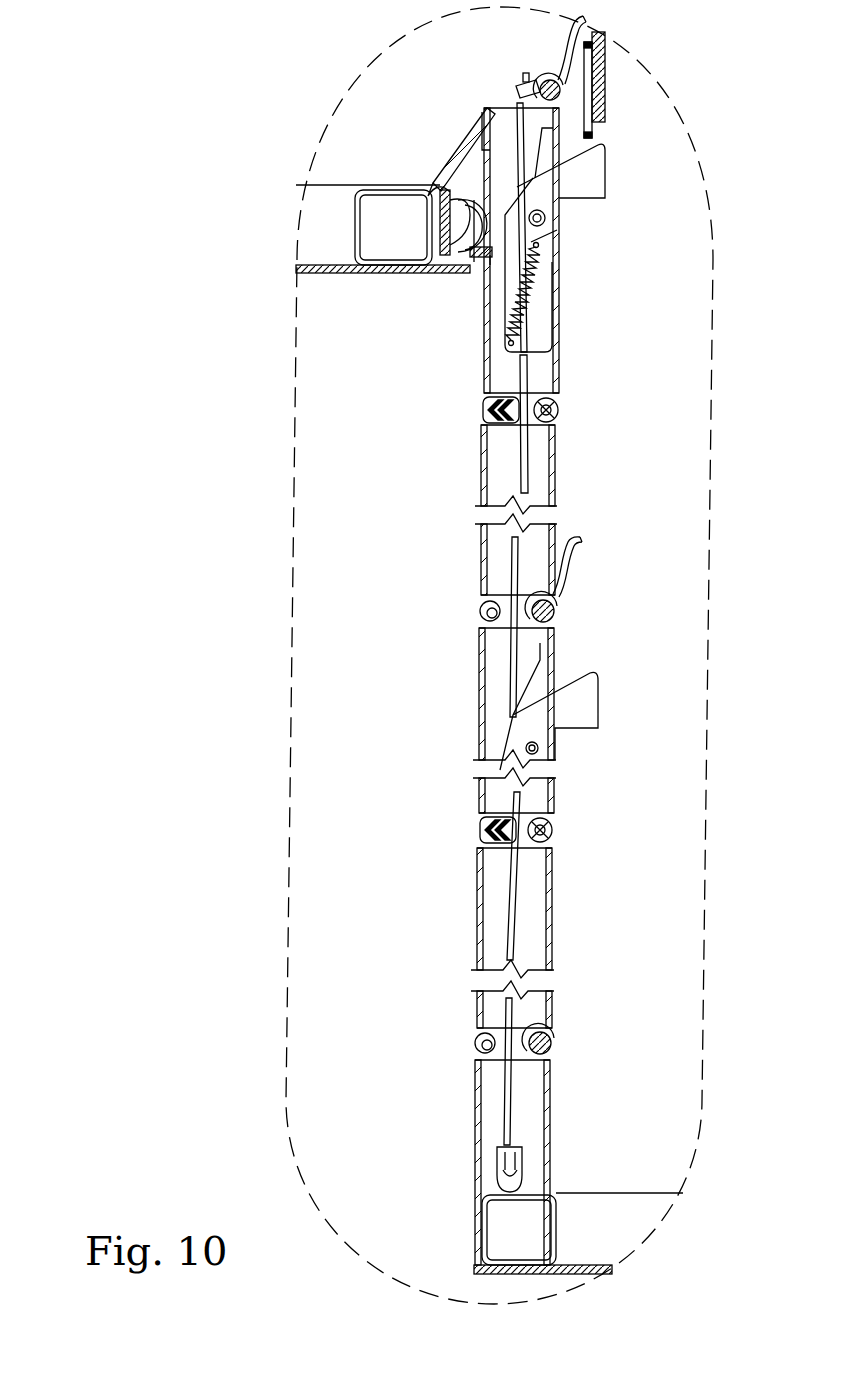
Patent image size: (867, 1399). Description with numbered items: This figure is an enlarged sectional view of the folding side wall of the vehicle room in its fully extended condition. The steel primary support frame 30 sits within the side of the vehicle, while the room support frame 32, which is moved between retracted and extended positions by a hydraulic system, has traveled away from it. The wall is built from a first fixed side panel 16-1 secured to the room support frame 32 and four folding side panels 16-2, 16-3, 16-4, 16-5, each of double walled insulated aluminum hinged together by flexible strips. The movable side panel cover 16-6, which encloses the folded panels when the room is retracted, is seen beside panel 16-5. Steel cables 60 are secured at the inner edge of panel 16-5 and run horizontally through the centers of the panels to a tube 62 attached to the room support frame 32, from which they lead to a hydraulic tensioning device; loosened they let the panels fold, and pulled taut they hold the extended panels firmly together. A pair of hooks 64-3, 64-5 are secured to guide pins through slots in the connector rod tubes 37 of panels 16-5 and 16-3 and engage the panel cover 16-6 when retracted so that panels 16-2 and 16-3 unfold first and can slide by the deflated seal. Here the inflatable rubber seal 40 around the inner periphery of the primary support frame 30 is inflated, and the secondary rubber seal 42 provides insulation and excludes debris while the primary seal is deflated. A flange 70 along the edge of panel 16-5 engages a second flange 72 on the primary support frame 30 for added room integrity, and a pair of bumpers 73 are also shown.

The first fixed side panel 16-1 is at (553, 1112).
The folding side panel 16-2 is at (556, 902).
The folding side panel 16-3 is at (560, 650).
The folding side panel 16-4 is at (560, 468).
The folding side panel 16-5 is at (560, 345).
The movable side panel cover 16-6 is at (590, 100).
The primary support frame 30 is at (372, 188).
The room support frame 32 is at (556, 1216).
The connector rod tube 37 is at (557, 1046).
The inflatable rubber seal 40 is at (450, 252).
The secondary rubber seal 42 is at (476, 260).
The steel cable 60 is at (505, 1105).
The tube 62 is at (496, 1167).
The hook 64-3 is at (583, 539).
The hook 64-5 is at (585, 18).
The flange 70 is at (468, 140).
The second flange 72 is at (440, 188).
The bumper 73 is at (602, 710).